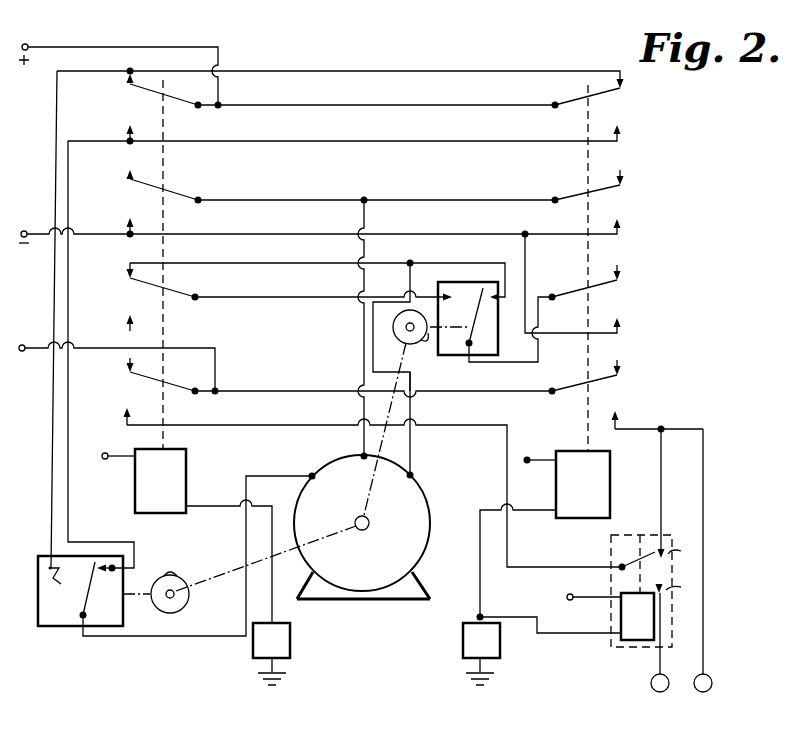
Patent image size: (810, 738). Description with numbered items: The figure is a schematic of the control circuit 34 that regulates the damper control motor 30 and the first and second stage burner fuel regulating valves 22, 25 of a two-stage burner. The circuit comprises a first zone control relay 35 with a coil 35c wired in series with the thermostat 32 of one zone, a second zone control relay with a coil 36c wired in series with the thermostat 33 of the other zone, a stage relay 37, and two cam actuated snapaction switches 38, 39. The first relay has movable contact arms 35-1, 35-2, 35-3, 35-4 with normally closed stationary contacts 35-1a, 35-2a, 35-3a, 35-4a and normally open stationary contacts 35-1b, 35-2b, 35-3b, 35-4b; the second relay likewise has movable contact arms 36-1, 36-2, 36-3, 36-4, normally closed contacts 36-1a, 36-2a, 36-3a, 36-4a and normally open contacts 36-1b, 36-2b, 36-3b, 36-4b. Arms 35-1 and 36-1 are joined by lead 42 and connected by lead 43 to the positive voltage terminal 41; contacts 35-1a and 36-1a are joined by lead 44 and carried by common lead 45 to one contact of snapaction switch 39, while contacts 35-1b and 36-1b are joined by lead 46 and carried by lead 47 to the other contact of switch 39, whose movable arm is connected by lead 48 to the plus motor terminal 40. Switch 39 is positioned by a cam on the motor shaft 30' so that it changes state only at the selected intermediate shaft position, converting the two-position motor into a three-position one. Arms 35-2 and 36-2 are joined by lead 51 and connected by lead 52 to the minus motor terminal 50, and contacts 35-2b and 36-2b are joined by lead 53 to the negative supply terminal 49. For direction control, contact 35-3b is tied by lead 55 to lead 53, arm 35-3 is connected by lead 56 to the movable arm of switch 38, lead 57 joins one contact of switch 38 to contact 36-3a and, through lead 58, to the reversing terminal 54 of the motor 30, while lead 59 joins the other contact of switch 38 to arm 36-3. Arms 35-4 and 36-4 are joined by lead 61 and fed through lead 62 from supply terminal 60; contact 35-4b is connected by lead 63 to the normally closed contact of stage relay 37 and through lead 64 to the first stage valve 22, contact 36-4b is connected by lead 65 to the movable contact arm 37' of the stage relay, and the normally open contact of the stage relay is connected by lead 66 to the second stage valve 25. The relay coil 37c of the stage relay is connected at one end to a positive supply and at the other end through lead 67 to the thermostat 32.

The positive voltage terminal 41 is at (28, 46).
The lead 43 is at (142, 47).
The lead 44 is at (441, 71).
The lead 42 is at (444, 105).
The common lead 45 is at (55, 128).
The lead 46 is at (441, 141).
The lead 47 is at (68, 172).
The negative voltage terminal 49 is at (27, 224).
The lead 51 is at (434, 200).
The lead 53 is at (434, 234).
The lead 55 is at (528, 272).
The lead 56 is at (544, 345).
The lead 57 is at (442, 263).
The lead 58 is at (413, 377).
The lead 59 is at (288, 297).
The supply terminal 60 is at (23, 345).
The lead 61 is at (296, 391).
The lead 62 is at (196, 348).
The lead 63 is at (652, 434).
The lead 64 is at (704, 502).
The lead 65 is at (504, 434).
The lead 66 is at (656, 660).
The lead 67 is at (518, 617).
The movable relay contact arm 36-1 is at (179, 107).
The normally closed stationary contact 36-1a is at (126, 84).
The normally open stationary contact 36-1b is at (126, 130).
The movable relay contact arm 36-2 is at (180, 196).
The normally closed stationary contact 36-2a is at (126, 180).
The normally open stationary contact 36-2b is at (126, 222).
The movable relay contact arm 36-3 is at (193, 293).
The normally closed stationary contact 36-3a is at (126, 268).
The normally open stationary contact 36-3b is at (126, 316).
The movable relay contact arm 36-4 is at (184, 389).
The normally closed stationary contact 36-4a is at (126, 368).
The normally open stationary contact 36-4b is at (123, 408).
The relay coil 36c is at (172, 485).
The first zone control relay 35 is at (595, 52).
The control circuit 34 is at (711, 167).
The movable relay contact arm 35-1 is at (580, 101).
The normally closed stationary contact 35-1a is at (624, 86).
The normally open stationary contact 35-1b is at (622, 134).
The movable relay contact arm 35-2 is at (578, 198).
The normally closed stationary contact 35-2a is at (624, 176).
The normally open stationary contact 35-2b is at (622, 226).
The movable relay contact arm 35-3 is at (592, 293).
The normally closed stationary contact 35-3a is at (622, 272).
The normally open stationary contact 35-3b is at (622, 325).
The movable relay contact arm 35-4 is at (576, 389).
The normally closed stationary contact 35-4a is at (622, 367).
The normally open stationary contact 35-4b is at (619, 416).
The relay coil 35c is at (590, 486).
The cam actuated snapaction switch 38 is at (463, 357).
The cam controlled snapaction switch 39 is at (54, 627).
The plus motor terminal 40 is at (314, 478).
The lead 48 is at (186, 636).
The minus motor terminal 50 is at (364, 459).
The lead 52 is at (363, 357).
The direction control terminal 54 is at (410, 478).
The damper control motor 30 is at (382, 527).
The motor shaft 30' is at (383, 531).
The thermostat 32 is at (462, 648).
The thermostat 33 is at (291, 645).
The stage relay 37 is at (632, 538).
The movable contact arm 37' is at (617, 558).
The relay coil 37c is at (648, 625).
The first stage burner fuel regulating valve 22 is at (713, 685).
The second stage burner fuel regulating valve 25 is at (666, 692).